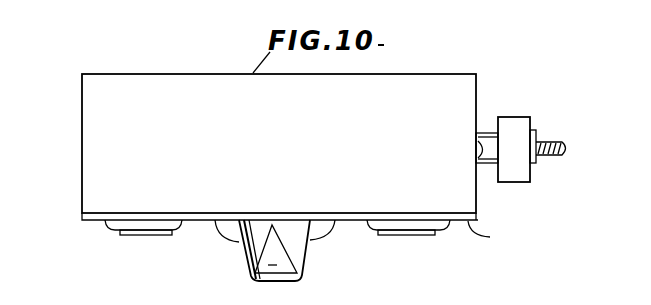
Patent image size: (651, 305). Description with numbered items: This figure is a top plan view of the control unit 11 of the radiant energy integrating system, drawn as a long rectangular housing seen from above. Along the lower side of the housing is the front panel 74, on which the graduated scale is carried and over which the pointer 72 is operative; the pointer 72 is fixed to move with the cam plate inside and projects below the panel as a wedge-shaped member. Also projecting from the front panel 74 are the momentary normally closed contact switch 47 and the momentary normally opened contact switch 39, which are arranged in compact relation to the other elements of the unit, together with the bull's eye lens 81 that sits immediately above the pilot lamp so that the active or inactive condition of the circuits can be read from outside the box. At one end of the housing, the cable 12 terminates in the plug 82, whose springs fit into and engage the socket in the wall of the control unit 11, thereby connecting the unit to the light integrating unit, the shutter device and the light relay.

The control unit 11 is at (83, 118).
The cable 12 is at (558, 139).
The momentary normally opened contact switch 39 is at (392, 237).
The momentary normally closed contact switch 47 is at (131, 236).
The pointer 72 is at (301, 255).
The front panel 74 is at (494, 234).
The bull's eye lens 81 is at (237, 250).
The plug 82 is at (508, 127).